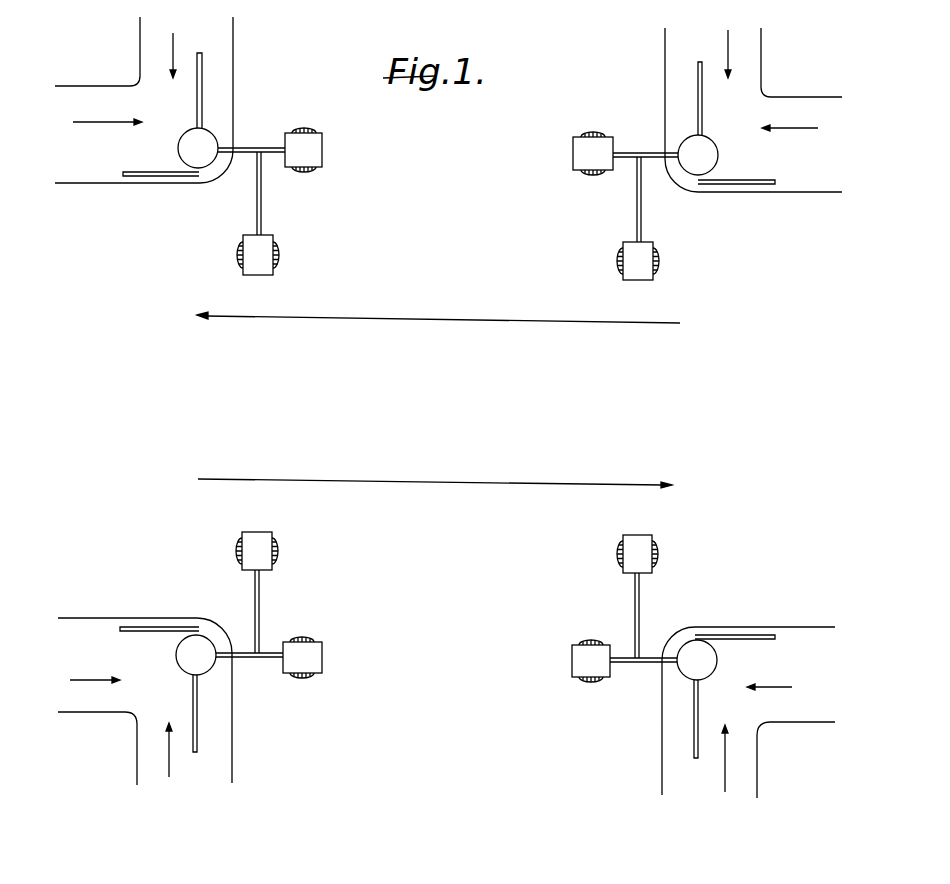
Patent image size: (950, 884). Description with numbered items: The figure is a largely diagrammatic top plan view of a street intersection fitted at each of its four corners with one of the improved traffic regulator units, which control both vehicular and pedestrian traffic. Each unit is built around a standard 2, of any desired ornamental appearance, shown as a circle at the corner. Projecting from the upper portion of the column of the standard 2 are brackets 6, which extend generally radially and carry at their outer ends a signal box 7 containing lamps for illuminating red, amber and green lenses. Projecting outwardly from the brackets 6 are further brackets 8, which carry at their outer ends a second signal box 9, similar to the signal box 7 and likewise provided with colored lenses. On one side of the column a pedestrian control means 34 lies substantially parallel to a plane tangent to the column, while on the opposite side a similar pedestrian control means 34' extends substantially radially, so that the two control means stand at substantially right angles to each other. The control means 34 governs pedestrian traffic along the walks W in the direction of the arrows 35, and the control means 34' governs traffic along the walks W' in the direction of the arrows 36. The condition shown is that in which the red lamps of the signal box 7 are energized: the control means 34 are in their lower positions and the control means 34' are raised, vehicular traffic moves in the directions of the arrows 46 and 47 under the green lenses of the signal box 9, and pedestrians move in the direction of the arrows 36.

The standard 2 is at (187, 146).
The brackets 6 is at (243, 148).
The signal box 7 is at (313, 145).
The brackets 8 is at (262, 197).
The signal box 9 is at (263, 258).
The pedestrian control means 34 is at (447, 405).
The pedestrian control means 34' is at (447, 405).
The arrows 35 is at (176, 43).
The arrows 36 is at (108, 124).
The arrows 46 is at (472, 318).
The arrows 47 is at (480, 482).